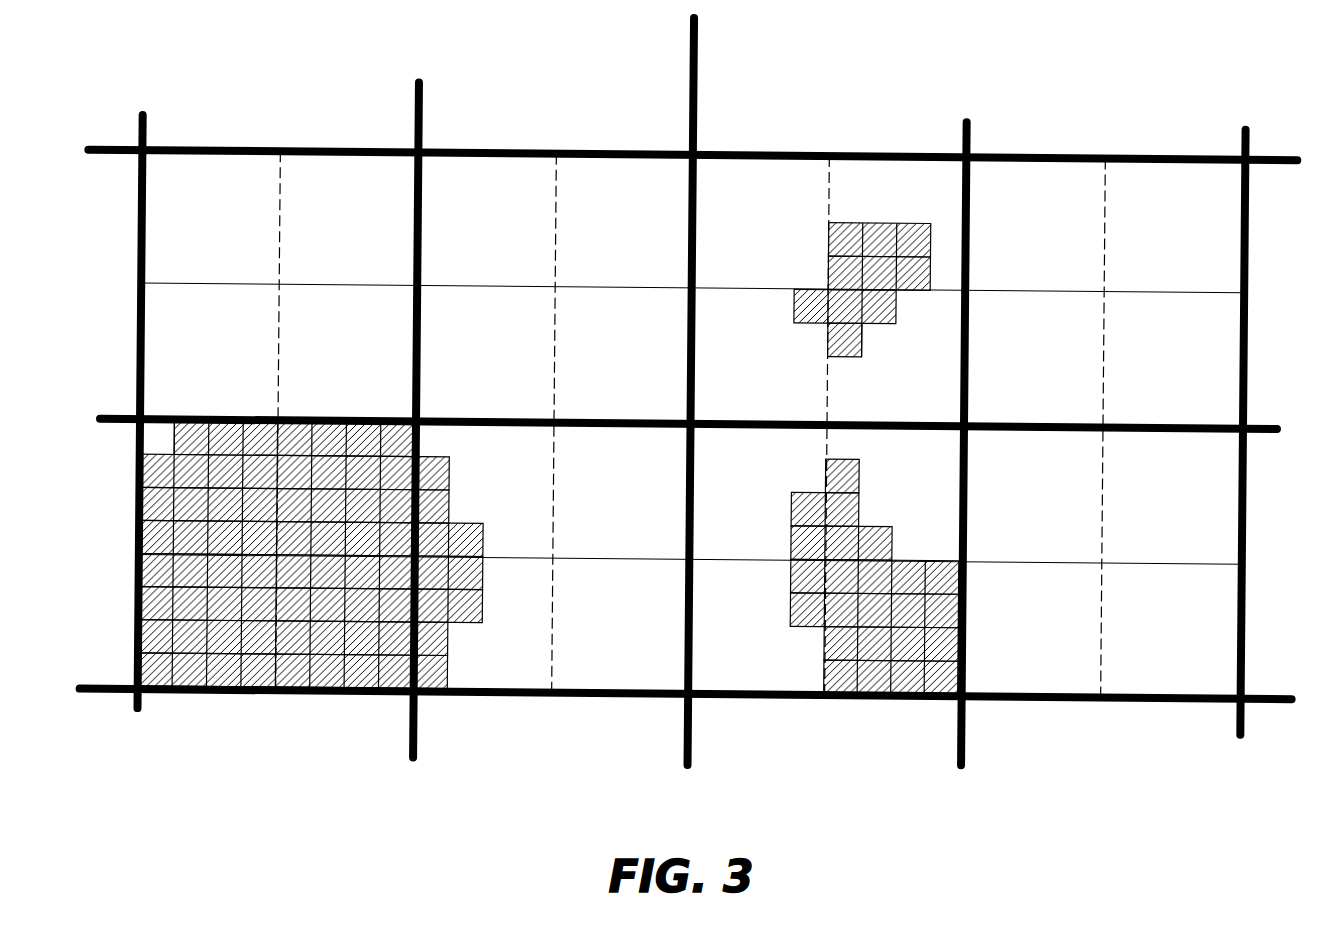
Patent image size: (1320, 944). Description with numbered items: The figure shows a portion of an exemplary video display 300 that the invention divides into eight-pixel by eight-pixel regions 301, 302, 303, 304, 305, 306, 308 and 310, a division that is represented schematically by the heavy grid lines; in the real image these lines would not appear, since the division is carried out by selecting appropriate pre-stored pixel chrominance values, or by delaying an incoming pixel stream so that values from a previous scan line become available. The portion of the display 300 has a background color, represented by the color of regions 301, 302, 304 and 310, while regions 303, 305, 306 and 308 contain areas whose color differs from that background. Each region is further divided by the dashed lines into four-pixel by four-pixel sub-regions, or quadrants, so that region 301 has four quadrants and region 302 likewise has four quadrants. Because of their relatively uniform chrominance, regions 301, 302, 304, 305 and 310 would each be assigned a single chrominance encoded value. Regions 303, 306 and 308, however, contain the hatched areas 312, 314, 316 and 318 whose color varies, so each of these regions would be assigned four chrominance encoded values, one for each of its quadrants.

The video display 300 is at (688, 392).
The region 301 is at (279, 227).
The region 302 is at (554, 220).
The region 303 is at (761, 106).
The region 304 is at (1140, 126).
The region 305 is at (311, 611).
The region 306 is at (669, 750).
The region 308 is at (848, 615).
The region 310 is at (1091, 739).
The area 312 is at (907, 220).
The area 314 is at (509, 739).
The area 316 is at (542, 647).
The area 318 is at (917, 719).